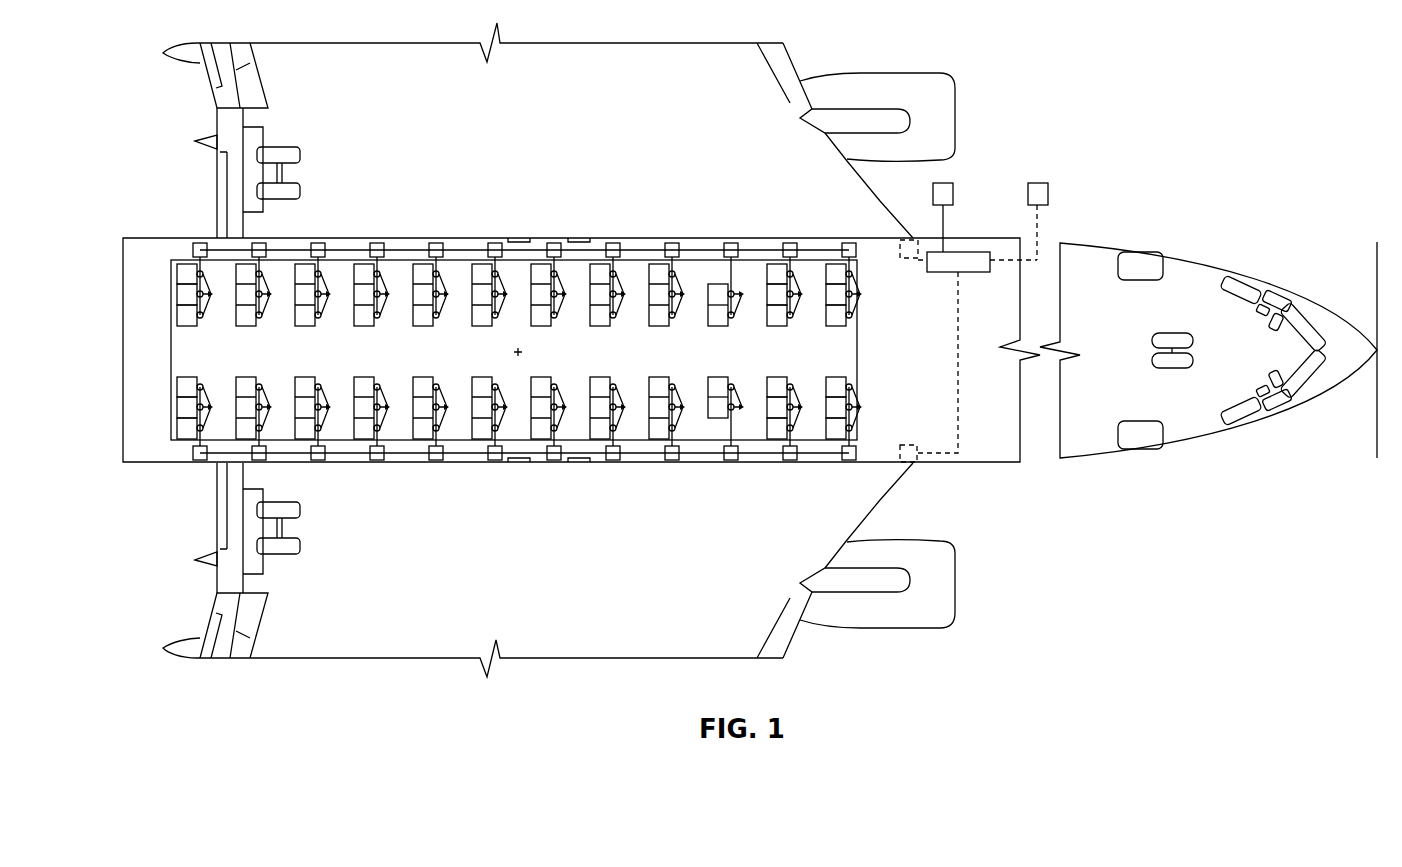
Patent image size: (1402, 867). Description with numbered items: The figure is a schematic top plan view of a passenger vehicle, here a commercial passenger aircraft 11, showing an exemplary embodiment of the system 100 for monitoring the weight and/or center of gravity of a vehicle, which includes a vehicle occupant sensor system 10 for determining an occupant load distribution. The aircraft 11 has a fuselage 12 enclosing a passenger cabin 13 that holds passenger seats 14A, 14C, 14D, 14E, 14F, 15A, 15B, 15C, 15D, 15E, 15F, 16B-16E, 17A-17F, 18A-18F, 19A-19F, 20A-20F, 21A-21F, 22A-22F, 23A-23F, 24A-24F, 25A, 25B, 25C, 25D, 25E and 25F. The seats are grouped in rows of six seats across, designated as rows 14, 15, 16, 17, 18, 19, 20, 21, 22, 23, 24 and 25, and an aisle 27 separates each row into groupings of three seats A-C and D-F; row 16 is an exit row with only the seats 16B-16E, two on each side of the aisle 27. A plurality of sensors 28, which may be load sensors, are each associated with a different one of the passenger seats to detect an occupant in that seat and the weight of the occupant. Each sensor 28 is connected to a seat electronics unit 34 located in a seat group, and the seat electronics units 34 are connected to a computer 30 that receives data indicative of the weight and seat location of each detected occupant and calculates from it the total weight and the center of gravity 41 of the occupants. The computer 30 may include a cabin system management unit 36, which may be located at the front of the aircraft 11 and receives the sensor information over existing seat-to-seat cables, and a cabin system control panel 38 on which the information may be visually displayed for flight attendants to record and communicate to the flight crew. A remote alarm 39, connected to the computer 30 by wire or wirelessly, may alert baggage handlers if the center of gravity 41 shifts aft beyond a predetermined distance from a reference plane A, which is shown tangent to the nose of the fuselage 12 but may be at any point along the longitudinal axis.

The vehicle occupant sensor system 10 is at (771, 175).
The commercial passenger aircraft 11 is at (573, 364).
The fuselage 12 is at (173, 471).
The passenger cabin 13 is at (841, 346).
The seat row 14 is at (850, 345).
The passenger seat 14A is at (858, 261).
The passenger seat 14C is at (852, 317).
The passenger seat 14D is at (852, 385).
The passenger seat 14E is at (846, 407).
The passenger seat 14F is at (852, 428).
The seat row 15 is at (786, 349).
The passenger seat 15A is at (794, 272).
The passenger seat 15B is at (768, 304).
The passenger seat 15C is at (786, 318).
The passenger seat 15D is at (791, 384).
The passenger seat 15E is at (786, 407).
The passenger seat 15F is at (782, 439).
The exit row 16 is at (748, 314).
The passenger seats 16B-16E is at (726, 277).
The seat row 17 is at (636, 323).
The passenger seats 17A-17F is at (650, 257).
The seat row 18 is at (575, 313).
The passenger seats 18A-18F is at (594, 257).
The seat row 19 is at (521, 394).
The passenger seats 19A-19F is at (539, 447).
The seat row 20 is at (454, 389).
The passenger seats 20A-20F is at (476, 447).
The seat row 21 is at (386, 399).
The passenger seats 21A-21F is at (414, 446).
The seat row 22 is at (386, 312).
The passenger seats 22A-22F is at (365, 257).
The seat row 23 is at (310, 322).
The passenger seats 23A-23F is at (304, 257).
The seat row 24 is at (195, 325).
The passenger seats 24A-24F is at (243, 257).
The seat row 25 is at (163, 349).
The passenger seat 25A is at (177, 274).
The passenger seat 25B is at (177, 295).
The passenger seat 25C is at (177, 315).
The passenger seat 25D is at (177, 387).
The passenger seat 25E is at (177, 407).
The passenger seat 25F is at (177, 428).
The aisle 27 is at (437, 350).
The sensor 28 is at (542, 351).
The computer 30 is at (967, 278).
The seat electronics unit 34 is at (792, 243).
The cabin system management unit 36 is at (960, 250).
The cabin system control panel 38 is at (945, 182).
The remote alarm 39 is at (1038, 182).
The center of gravity 41 is at (520, 350).
The system for monitoring the weight and/or center of gravity of a vehicle 100 is at (1052, 223).
The reference plane A is at (1375, 262).